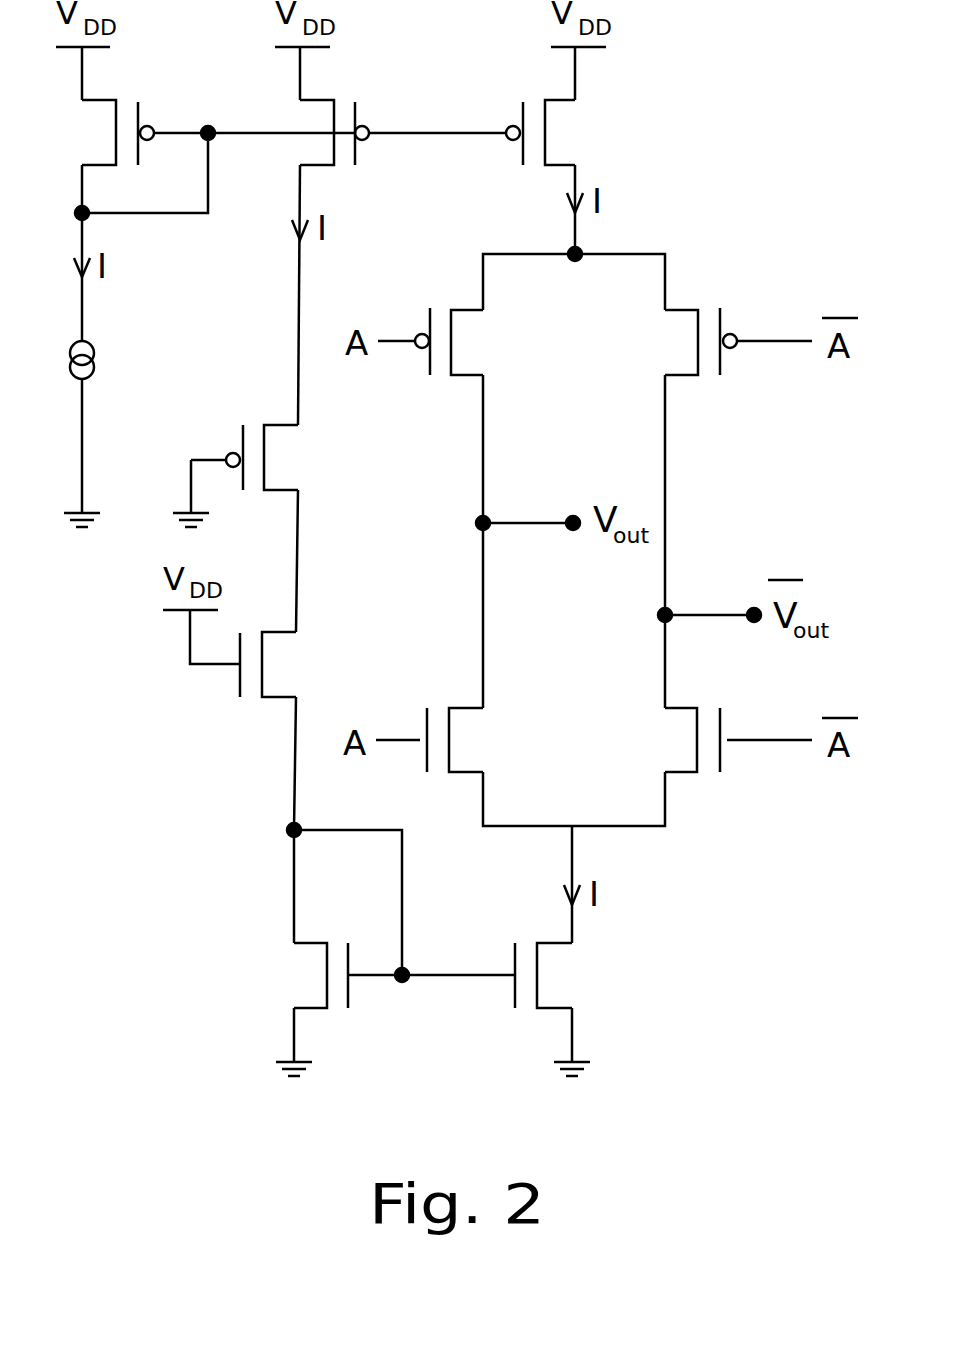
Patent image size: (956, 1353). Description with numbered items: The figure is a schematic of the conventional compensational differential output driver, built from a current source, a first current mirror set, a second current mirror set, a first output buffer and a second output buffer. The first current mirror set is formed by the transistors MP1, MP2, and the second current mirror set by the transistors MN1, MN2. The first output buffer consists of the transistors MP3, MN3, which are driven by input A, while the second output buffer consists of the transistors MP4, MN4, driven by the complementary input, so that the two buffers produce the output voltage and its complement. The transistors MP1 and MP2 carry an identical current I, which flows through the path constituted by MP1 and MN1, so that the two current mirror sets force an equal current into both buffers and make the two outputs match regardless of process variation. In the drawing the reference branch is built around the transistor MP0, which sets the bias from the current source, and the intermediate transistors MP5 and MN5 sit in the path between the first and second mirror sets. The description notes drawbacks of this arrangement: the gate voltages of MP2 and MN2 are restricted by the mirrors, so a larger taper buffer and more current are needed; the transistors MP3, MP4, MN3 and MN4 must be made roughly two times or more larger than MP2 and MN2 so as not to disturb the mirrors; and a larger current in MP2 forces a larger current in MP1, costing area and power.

The PMOS transistor MP0 (current mirror reference) MP0 is at (93, 106).
The transistor MP1 is at (360, 106).
The transistor MP2 is at (575, 106).
The transistor MP3 is at (473, 341).
The transistor MP4 is at (674, 341).
The PMOS transistor MP5 (replica) MP5 is at (284, 457).
The transistor MN1 is at (296, 919).
The transistor MN2 is at (565, 975).
The transistor MN3 is at (479, 740).
The transistor MN4 is at (665, 740).
The NMOS transistor MN5 (replica) MN5 is at (292, 664).